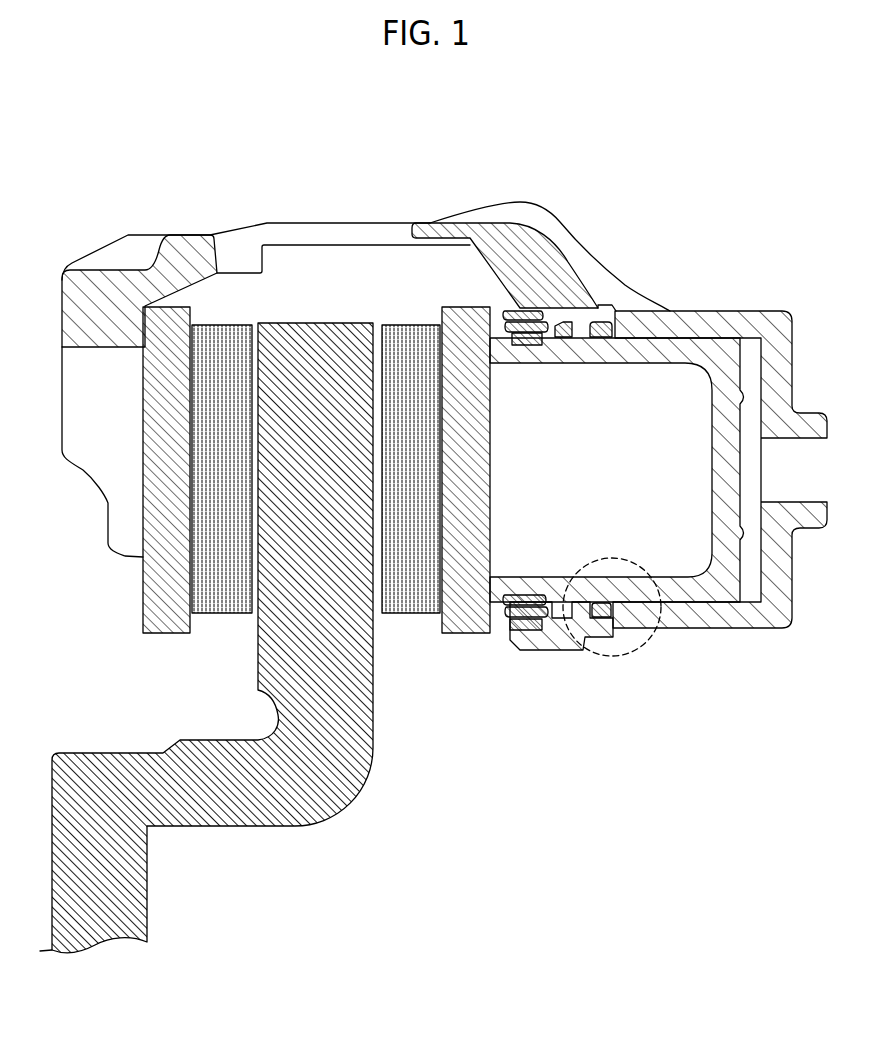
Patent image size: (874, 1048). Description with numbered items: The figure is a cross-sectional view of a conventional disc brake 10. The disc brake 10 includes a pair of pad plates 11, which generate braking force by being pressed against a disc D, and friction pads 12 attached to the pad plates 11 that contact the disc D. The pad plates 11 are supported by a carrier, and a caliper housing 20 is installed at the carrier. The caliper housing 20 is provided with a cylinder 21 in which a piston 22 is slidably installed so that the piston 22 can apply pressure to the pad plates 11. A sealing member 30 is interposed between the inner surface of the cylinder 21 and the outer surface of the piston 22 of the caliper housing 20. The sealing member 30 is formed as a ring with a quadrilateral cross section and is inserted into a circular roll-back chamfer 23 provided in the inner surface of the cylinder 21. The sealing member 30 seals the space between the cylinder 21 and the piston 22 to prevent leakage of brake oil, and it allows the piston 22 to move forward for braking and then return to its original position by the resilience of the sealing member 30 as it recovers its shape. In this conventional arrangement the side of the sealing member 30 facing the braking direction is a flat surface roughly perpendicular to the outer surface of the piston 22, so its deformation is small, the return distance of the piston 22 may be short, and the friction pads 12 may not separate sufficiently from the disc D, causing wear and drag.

The disc brake 10 is at (755, 142).
The pad plates 11 is at (160, 630).
The friction pads 12 is at (223, 598).
The caliper housing 20 is at (600, 228).
The cylinder 21 is at (758, 615).
The piston 22 is at (702, 592).
The roll-back chamfer 23 is at (615, 330).
The sealing member 30 is at (603, 618).
The disc D is at (245, 795).